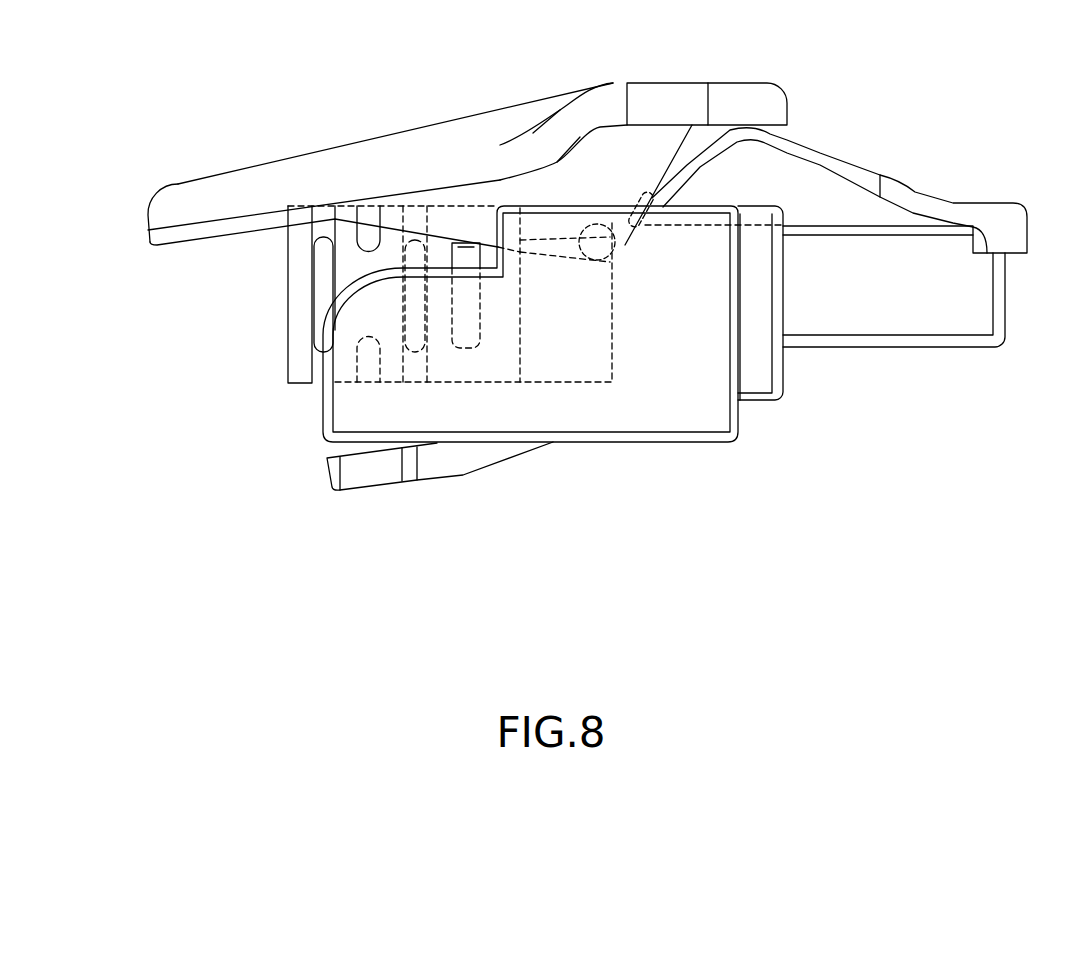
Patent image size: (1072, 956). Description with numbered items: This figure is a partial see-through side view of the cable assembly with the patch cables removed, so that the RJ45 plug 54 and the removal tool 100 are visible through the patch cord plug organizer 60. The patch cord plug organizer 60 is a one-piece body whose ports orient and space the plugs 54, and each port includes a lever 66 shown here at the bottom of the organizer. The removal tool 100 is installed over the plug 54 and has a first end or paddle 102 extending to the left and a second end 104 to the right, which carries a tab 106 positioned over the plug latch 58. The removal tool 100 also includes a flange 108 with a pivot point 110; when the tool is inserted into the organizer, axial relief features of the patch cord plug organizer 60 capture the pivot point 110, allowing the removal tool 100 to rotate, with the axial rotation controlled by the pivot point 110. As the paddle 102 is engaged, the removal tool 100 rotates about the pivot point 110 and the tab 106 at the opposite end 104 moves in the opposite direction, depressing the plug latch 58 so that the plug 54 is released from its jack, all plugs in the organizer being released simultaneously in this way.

The RJ45 plug 54 is at (912, 310).
The plug latch 58 is at (852, 175).
The patch cord plug organizer 60 is at (652, 408).
The lever 66 is at (370, 472).
The removal tool 100 is at (333, 130).
The paddle 102 is at (163, 213).
The second end 104 is at (703, 102).
The tab 106 is at (770, 98).
The flange 108 is at (600, 175).
The pivot point 110 is at (580, 237).